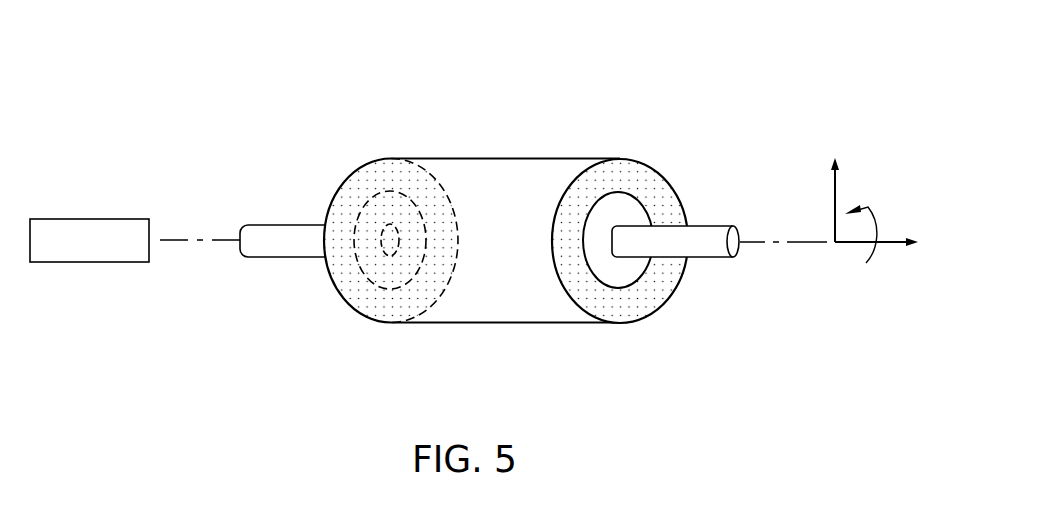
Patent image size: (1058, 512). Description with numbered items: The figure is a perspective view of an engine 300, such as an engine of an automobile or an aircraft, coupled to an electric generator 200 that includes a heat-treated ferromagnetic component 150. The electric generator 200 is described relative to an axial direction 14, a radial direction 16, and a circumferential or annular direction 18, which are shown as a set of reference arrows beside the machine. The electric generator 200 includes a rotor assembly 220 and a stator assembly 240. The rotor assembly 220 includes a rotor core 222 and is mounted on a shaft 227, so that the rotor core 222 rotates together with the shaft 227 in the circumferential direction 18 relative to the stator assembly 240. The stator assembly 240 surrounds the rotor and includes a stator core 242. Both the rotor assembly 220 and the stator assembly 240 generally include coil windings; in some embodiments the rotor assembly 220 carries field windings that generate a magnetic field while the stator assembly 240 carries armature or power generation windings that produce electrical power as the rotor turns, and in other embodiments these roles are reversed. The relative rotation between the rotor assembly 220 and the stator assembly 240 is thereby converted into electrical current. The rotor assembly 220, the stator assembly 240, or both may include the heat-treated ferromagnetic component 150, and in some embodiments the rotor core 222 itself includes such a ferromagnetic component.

The engine 300 is at (88, 219).
The electric generator 200 is at (532, 211).
The stator core 242 is at (660, 162).
The stator assembly 240 is at (672, 186).
The rotor core 222 is at (362, 210).
The rotor assembly 220 is at (630, 288).
The heat-treated ferromagnetic component 150 is at (608, 262).
The shaft 227 is at (713, 245).
The radial direction 16 is at (840, 165).
The circumferential direction 18 is at (868, 207).
The axial direction 14 is at (908, 233).